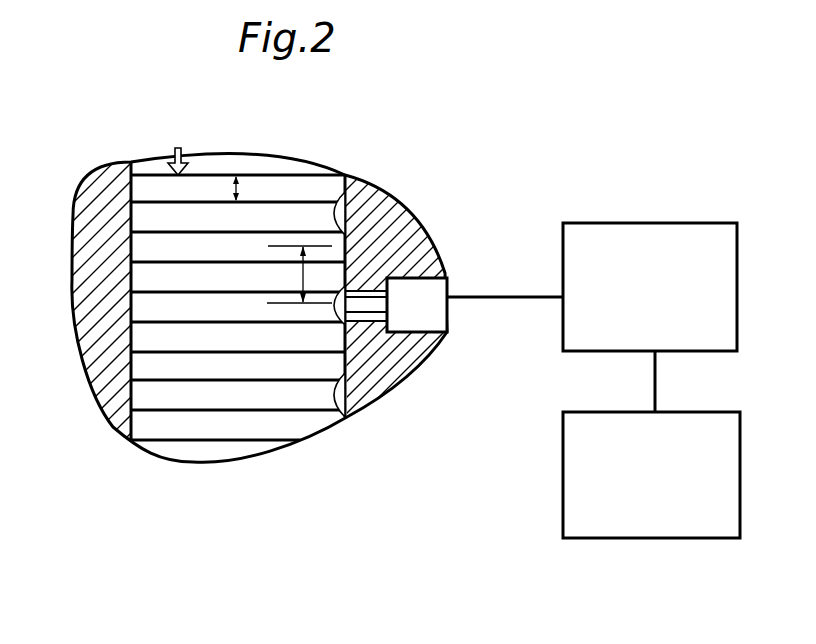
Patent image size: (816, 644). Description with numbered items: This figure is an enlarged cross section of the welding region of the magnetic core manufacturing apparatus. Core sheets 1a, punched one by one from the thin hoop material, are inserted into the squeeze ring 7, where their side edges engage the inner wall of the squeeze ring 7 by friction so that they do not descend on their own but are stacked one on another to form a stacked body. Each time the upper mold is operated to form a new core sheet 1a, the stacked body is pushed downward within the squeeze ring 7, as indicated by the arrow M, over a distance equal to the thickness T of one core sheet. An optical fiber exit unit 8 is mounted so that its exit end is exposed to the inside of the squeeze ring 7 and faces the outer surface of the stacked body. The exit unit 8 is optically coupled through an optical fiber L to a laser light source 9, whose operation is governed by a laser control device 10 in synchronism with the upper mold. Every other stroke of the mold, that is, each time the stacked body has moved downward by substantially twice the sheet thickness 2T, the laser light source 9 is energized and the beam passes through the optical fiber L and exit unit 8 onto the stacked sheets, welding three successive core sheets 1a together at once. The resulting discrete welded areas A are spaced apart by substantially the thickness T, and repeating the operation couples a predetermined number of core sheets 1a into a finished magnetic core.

The squeeze ring 7 is at (395, 213).
The core sheets 1a is at (210, 423).
The welded areas A is at (346, 430).
The arrow M is at (177, 148).
The thickness of the core sheets T is at (238, 186).
The twice the thickness of the core sheets 2T is at (306, 274).
The optical fiber exit unit 8 is at (413, 308).
The optical fiber L is at (496, 295).
The laser light source 9 is at (640, 223).
The laser control device 10 is at (653, 540).